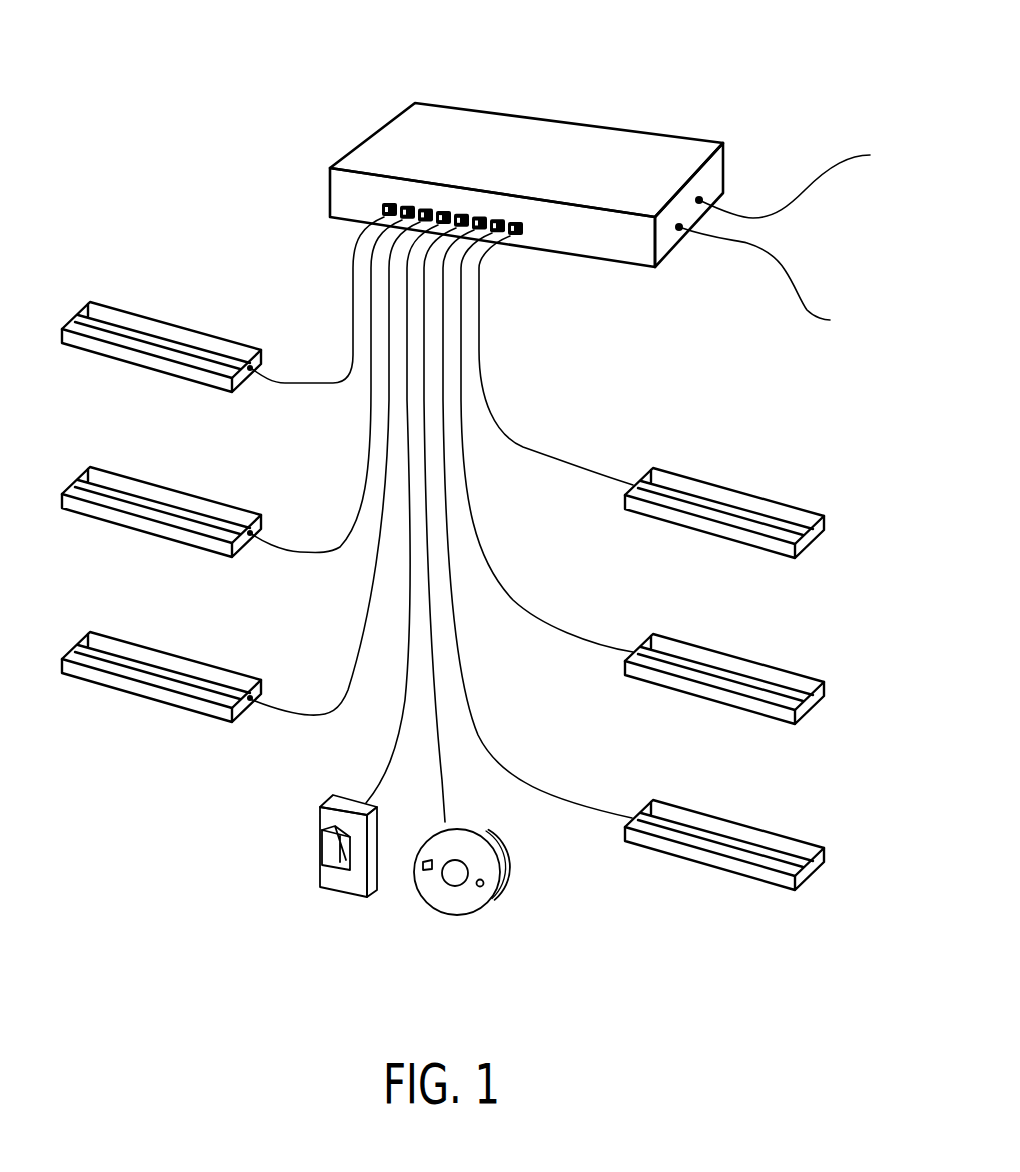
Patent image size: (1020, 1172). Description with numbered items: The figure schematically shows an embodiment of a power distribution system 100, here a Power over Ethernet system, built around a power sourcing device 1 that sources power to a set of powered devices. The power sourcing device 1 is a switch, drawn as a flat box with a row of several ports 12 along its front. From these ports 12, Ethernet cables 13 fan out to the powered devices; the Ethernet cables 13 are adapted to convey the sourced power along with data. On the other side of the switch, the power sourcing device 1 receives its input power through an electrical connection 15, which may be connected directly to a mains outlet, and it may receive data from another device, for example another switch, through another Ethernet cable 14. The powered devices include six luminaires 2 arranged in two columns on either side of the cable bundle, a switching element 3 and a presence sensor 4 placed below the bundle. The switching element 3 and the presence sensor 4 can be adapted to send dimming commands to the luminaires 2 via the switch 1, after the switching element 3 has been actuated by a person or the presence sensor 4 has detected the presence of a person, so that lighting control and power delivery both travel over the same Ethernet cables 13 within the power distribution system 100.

The power distribution system 100 is at (191, 93).
The power sourcing device 1 is at (690, 260).
The ports 12 is at (431, 196).
The Ethernet cables 13 is at (336, 282).
The Ethernet cable 14 is at (793, 203).
The electrical connection 15 is at (807, 310).
The luminaires 2 is at (143, 323).
The switching element 3 is at (322, 846).
The presence sensor 4 is at (495, 903).